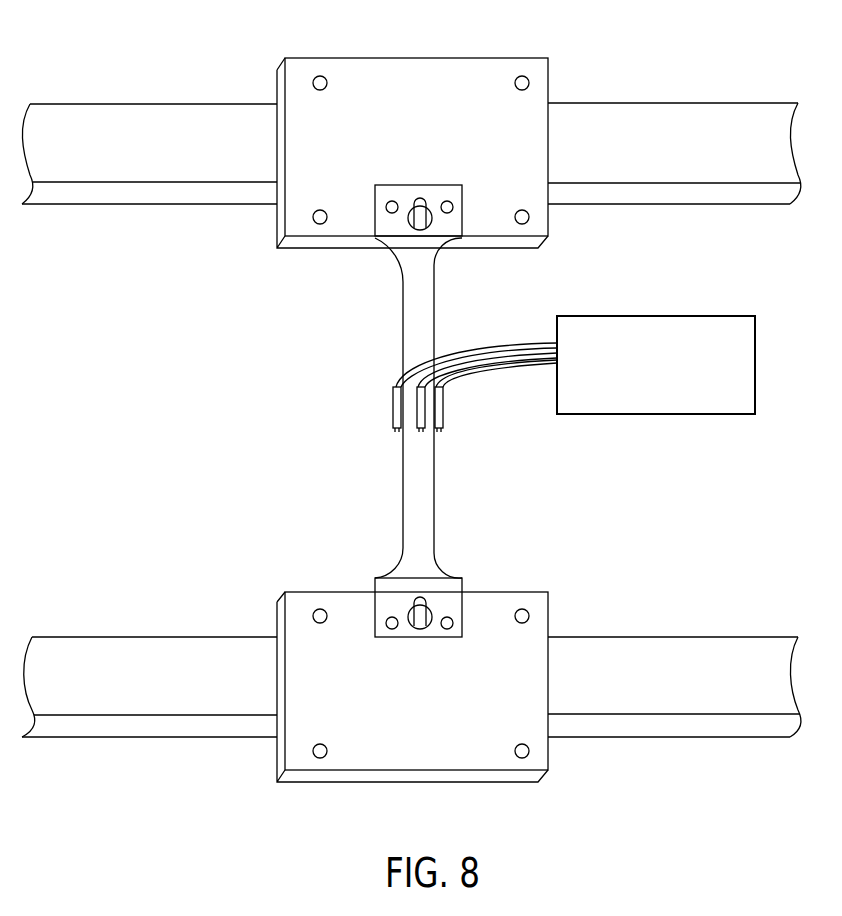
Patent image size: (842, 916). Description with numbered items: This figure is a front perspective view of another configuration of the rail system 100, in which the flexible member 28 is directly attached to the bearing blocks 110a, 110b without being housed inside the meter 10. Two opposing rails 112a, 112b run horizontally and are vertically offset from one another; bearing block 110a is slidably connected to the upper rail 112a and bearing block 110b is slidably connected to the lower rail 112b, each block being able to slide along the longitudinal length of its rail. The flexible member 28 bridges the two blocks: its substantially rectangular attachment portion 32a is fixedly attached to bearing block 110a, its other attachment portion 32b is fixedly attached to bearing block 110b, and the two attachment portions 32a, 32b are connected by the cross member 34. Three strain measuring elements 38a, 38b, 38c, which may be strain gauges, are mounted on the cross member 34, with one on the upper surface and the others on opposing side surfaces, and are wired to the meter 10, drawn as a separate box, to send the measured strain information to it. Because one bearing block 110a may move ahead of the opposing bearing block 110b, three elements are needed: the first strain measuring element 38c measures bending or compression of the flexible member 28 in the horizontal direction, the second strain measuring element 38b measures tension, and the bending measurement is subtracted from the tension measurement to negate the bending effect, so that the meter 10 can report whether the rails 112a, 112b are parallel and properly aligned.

The rail system 100 is at (411, 418).
The bearing block 110a is at (472, 70).
The bearing block 110b is at (515, 775).
The rail 112a is at (737, 113).
The rail 112b is at (702, 726).
The flexible member 28 is at (389, 408).
The attachment portion 32a is at (397, 238).
The attachment portion 32b is at (437, 578).
The cross member 34 is at (425, 518).
The strain measuring element 38a is at (422, 428).
The strain measuring element 38b is at (438, 428).
The strain measuring element 38c is at (398, 428).
The meter 10 is at (657, 316).